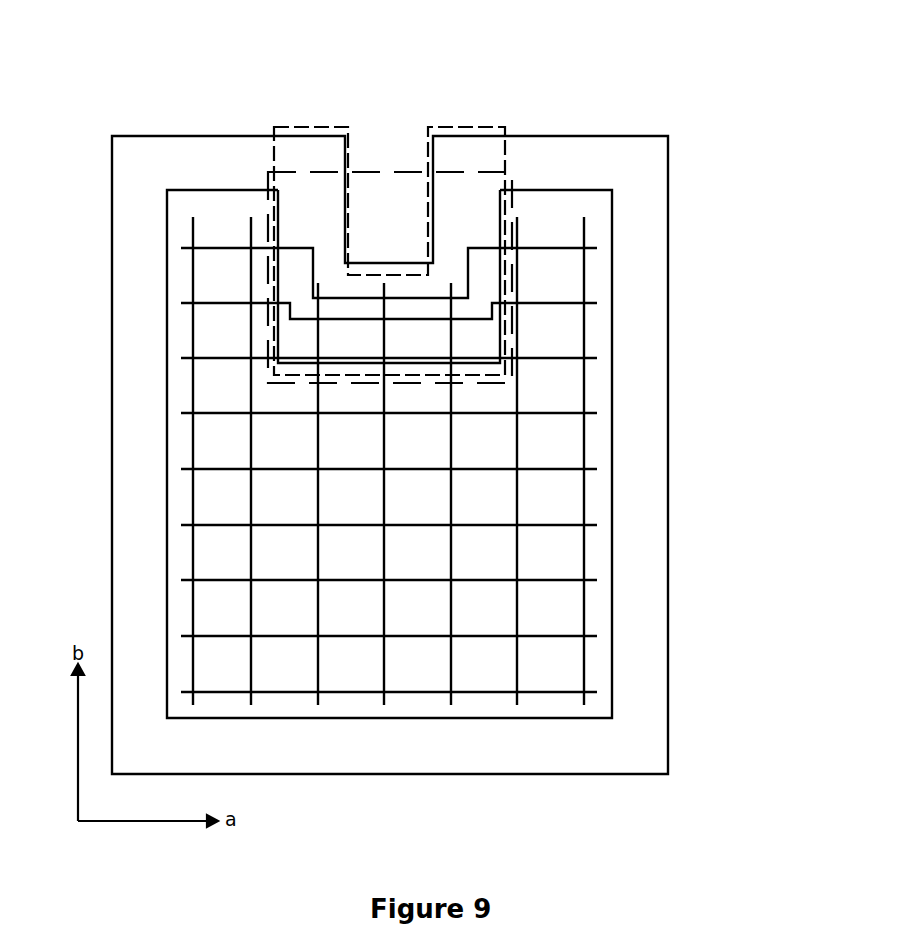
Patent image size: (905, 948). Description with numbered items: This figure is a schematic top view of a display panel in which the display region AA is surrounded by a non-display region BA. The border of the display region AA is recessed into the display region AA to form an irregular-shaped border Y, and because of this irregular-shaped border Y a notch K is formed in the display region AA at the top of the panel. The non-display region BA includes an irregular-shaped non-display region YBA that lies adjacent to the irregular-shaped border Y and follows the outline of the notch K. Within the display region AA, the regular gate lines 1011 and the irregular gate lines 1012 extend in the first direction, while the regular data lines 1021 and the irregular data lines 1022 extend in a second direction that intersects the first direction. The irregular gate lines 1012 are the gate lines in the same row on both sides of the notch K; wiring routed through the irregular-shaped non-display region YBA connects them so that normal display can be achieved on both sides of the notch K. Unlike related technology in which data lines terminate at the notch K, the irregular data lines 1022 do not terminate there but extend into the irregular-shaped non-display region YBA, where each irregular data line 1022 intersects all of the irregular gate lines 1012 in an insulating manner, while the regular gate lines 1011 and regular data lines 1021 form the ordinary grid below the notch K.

The irregular-shaped border Y is at (278, 233).
The irregular-shaped non-display region YBA is at (305, 126).
The notch K is at (472, 172).
The display region AA is at (533, 436).
The non-display region BA is at (630, 567).
The regular gate line 1011 is at (533, 635).
The irregular gate line 1012 is at (557, 302).
The regular data line 1021 is at (585, 618).
The irregular data line 1022 is at (385, 663).